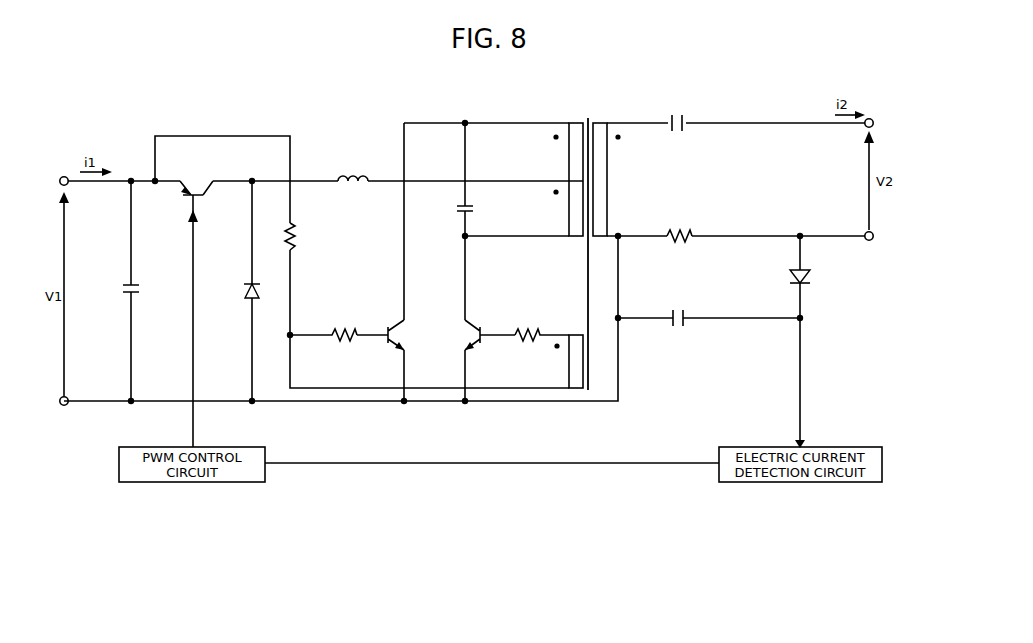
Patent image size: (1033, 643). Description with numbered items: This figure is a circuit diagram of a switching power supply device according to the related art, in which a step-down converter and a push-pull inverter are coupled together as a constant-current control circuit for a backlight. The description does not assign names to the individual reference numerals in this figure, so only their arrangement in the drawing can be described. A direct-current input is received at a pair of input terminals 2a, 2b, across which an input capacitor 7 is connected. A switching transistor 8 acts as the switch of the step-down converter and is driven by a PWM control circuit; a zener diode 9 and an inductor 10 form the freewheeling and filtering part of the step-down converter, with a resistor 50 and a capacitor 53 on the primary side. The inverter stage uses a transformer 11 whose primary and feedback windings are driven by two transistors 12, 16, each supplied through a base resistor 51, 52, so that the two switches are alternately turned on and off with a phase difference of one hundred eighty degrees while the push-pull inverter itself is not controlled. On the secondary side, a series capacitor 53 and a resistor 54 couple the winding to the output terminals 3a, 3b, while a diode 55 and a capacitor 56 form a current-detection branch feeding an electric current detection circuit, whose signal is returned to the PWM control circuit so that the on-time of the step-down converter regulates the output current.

The input terminal 2a is at (63, 176).
The input terminal 2b is at (63, 405).
The output terminal 3a is at (871, 118).
The output terminal 3b is at (871, 240).
The capacitor 7 is at (140, 289).
The switching transistor 8 is at (196, 197).
The zener diode 9 is at (258, 294).
The inductor 10 is at (355, 176).
The transformer 11 is at (598, 108).
The transistor 12 is at (389, 325).
The transistor 16 is at (481, 325).
The resistor 50 is at (296, 236).
The resistor 51 is at (342, 327).
The resistor 52 is at (527, 327).
The capacitor 53 is at (475, 208).
The resistor 54 is at (679, 228).
The diode 55 is at (808, 275).
The capacitor 56 is at (678, 308).